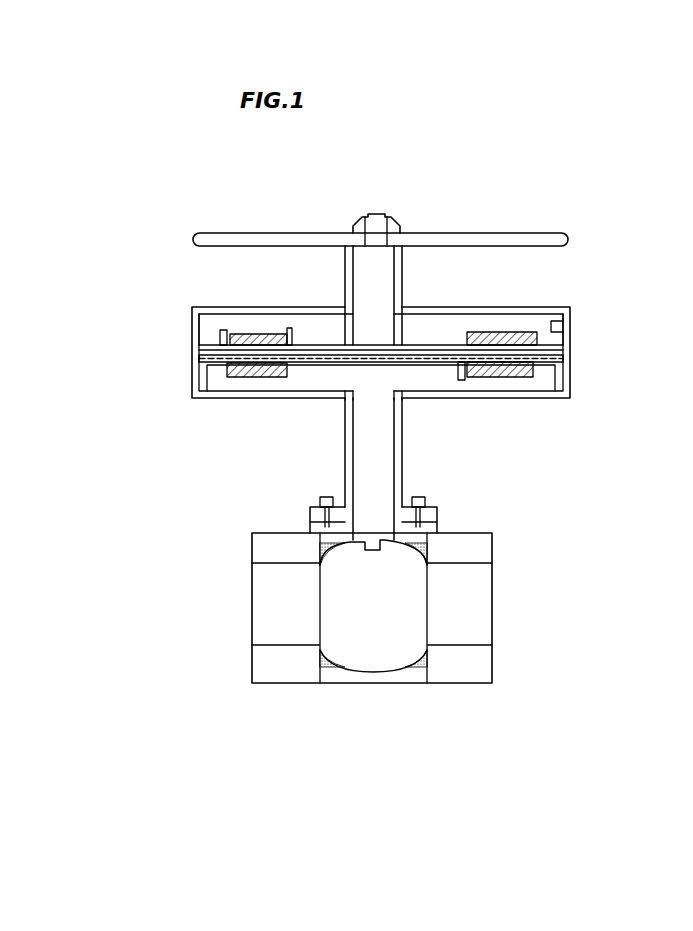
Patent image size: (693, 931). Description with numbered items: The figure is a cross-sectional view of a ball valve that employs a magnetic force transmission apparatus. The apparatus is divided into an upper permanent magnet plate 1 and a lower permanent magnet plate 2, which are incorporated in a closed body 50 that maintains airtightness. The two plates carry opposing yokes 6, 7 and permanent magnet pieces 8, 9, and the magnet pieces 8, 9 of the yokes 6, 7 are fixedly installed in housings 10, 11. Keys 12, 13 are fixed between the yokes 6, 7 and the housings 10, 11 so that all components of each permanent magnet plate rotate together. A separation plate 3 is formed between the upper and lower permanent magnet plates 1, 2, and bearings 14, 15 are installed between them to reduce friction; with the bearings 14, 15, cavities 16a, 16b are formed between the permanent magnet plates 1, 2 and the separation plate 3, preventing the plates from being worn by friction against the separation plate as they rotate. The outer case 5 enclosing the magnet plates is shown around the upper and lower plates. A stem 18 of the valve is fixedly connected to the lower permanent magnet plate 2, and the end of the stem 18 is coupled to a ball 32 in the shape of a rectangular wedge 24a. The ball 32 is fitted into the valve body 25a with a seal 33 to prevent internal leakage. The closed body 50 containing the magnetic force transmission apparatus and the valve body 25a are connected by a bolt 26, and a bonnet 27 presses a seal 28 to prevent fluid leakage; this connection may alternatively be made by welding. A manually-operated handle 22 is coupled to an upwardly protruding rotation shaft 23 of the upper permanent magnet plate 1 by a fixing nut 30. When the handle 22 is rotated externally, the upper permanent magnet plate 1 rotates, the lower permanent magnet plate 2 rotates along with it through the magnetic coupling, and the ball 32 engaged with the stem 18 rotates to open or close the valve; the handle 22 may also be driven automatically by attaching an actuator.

The upper permanent magnet plate 1 is at (80, 245).
The lower permanent magnet plate 2 is at (92, 390).
The separation plate 3 is at (537, 352).
The outer case 5 is at (567, 375).
The yoke 6 is at (228, 347).
The yoke 7 is at (218, 384).
The permanent magnet piece 8 is at (205, 357).
The permanent magnet piece 9 is at (232, 372).
The housing 10 is at (287, 328).
The housing 11 is at (250, 372).
The key 12 is at (265, 335).
The key 13 is at (463, 380).
The bearing 14 is at (553, 328).
The bearing 15 is at (547, 357).
The cavity 16a is at (345, 357).
The cavity 16b is at (367, 343).
The stem 18 is at (366, 523).
The manually-operated handle 22 is at (548, 233).
The rotation shaft 23 is at (380, 272).
The rectangular wedge 24a is at (380, 543).
The valve body 25a is at (478, 660).
The bolt 26 is at (337, 505).
The bonnet 27 is at (318, 513).
The seal 28 is at (320, 535).
The fixing nut 30 is at (390, 222).
The ball 32 is at (346, 653).
The seal 33 is at (422, 663).
The closed body 50 is at (405, 465).